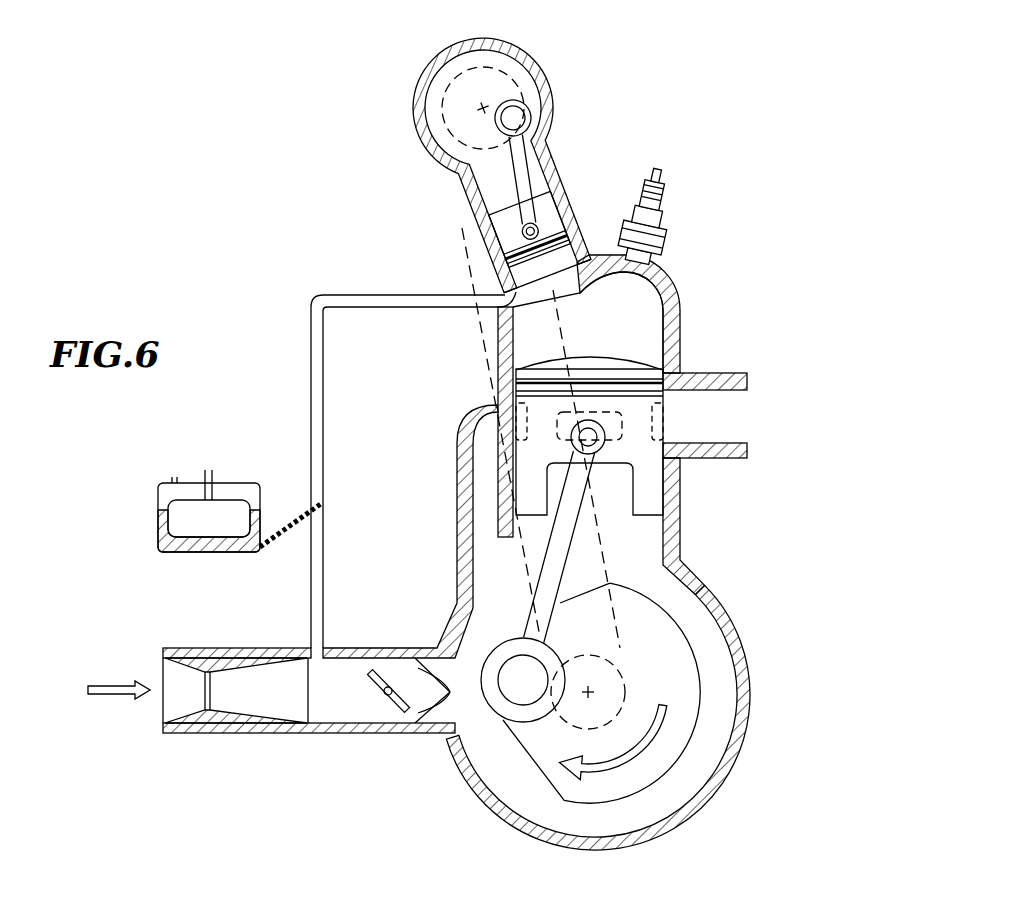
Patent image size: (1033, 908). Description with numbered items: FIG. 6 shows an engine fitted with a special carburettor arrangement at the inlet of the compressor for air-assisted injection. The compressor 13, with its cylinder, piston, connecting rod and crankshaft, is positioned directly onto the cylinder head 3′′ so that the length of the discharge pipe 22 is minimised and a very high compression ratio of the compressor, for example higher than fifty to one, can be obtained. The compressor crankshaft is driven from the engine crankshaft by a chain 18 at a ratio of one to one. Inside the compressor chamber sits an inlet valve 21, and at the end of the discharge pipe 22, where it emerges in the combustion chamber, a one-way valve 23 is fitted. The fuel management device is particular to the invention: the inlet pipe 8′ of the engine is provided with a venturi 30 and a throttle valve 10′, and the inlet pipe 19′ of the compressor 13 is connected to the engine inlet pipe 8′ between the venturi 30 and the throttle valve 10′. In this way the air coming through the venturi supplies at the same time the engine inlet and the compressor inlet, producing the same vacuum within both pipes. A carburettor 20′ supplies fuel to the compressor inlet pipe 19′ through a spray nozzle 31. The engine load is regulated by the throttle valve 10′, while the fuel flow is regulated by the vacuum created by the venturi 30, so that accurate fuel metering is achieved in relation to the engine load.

The compressor 13 is at (385, 132).
The inlet valve 21 is at (540, 277).
The discharge pipe 22 is at (592, 273).
The cylinder head 3′′ is at (678, 272).
The one-way valve 23 is at (588, 296).
The chain 18 is at (485, 335).
The inlet pipe of the compressor 19′ is at (327, 557).
The spray nozzle 31 is at (288, 517).
The carburettor 20′ is at (150, 520).
The venturi 30 is at (250, 716).
The inlet pipe of the engine 8′ is at (330, 735).
The throttle valve 10′ is at (392, 700).